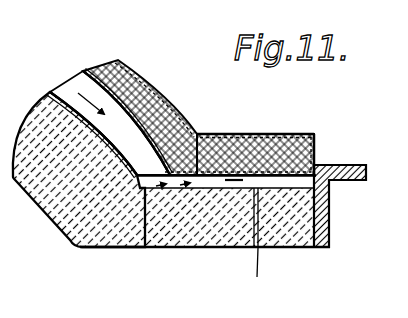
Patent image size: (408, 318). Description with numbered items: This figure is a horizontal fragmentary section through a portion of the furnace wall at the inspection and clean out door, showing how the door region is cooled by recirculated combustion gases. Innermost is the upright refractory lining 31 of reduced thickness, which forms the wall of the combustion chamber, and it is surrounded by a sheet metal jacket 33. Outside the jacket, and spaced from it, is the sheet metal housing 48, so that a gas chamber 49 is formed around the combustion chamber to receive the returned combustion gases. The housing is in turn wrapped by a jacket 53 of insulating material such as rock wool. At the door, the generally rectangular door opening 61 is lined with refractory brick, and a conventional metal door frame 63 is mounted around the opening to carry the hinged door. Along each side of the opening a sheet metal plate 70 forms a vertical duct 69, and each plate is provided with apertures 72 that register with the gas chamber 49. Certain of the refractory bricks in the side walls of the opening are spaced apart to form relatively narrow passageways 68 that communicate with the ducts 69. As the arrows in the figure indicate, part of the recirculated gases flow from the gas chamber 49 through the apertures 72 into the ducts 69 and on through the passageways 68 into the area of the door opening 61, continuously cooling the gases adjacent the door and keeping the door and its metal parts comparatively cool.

The refractory lining 31 is at (62, 212).
The sheet metal jacket 33 is at (63, 85).
The sheet metal housing 48 is at (72, 77).
The gas chamber 49 is at (124, 108).
The jacket of insulating material 53 is at (150, 112).
The apertures 72 is at (163, 160).
The sheet metal plate 70 is at (247, 134).
The vertical ducts 69 is at (278, 134).
The metal door frame 63 is at (337, 165).
The door opening 61 is at (304, 248).
The passageways 68 is at (257, 222).